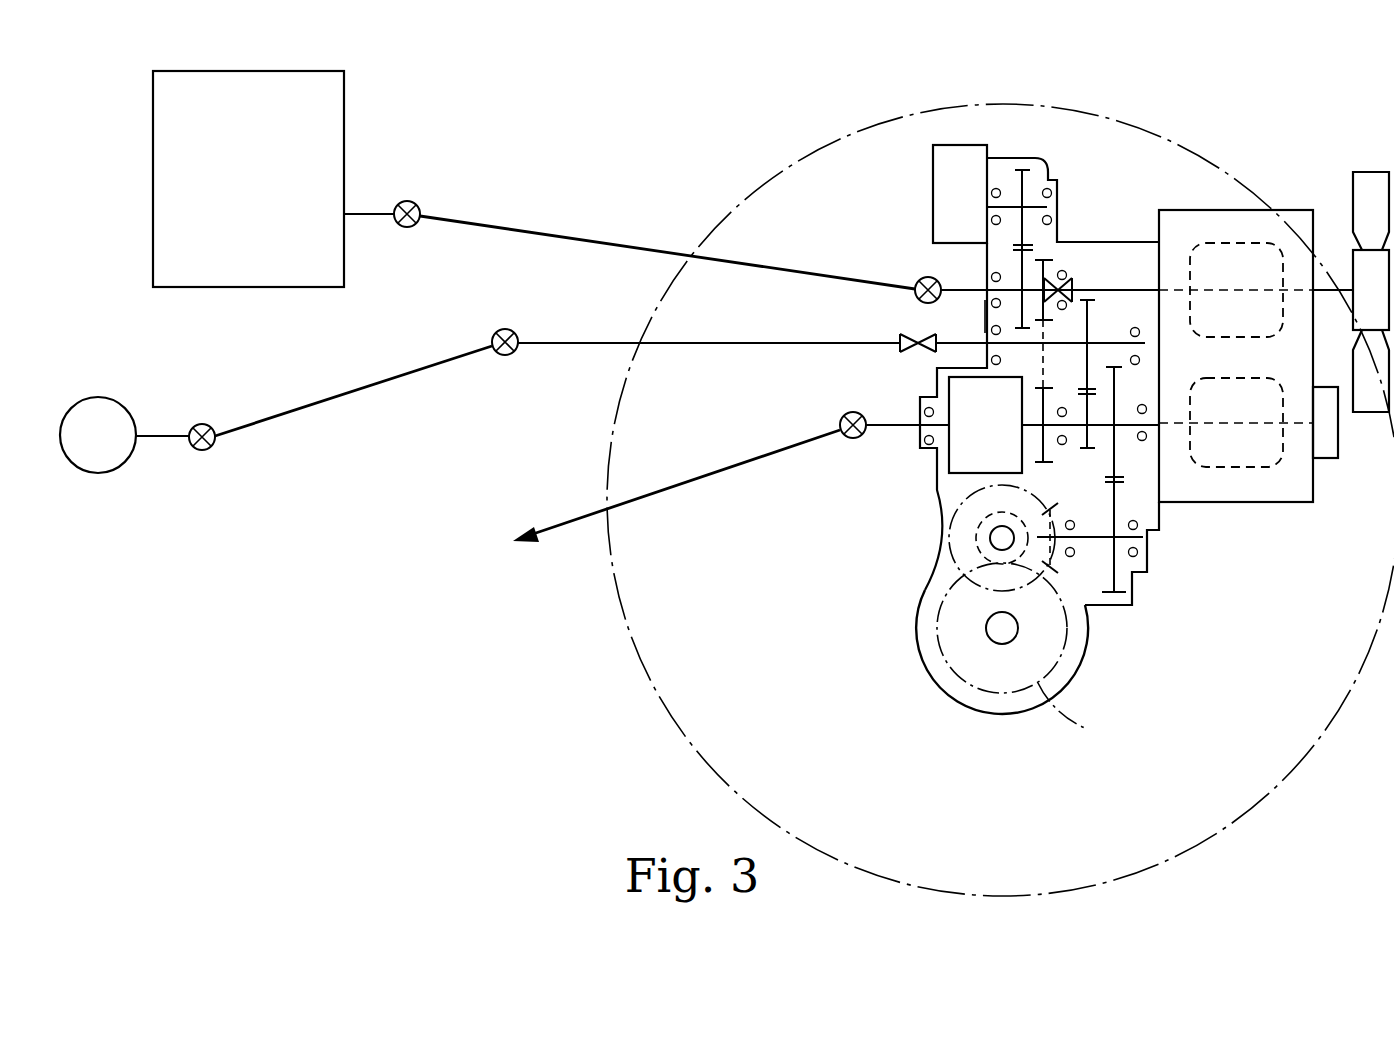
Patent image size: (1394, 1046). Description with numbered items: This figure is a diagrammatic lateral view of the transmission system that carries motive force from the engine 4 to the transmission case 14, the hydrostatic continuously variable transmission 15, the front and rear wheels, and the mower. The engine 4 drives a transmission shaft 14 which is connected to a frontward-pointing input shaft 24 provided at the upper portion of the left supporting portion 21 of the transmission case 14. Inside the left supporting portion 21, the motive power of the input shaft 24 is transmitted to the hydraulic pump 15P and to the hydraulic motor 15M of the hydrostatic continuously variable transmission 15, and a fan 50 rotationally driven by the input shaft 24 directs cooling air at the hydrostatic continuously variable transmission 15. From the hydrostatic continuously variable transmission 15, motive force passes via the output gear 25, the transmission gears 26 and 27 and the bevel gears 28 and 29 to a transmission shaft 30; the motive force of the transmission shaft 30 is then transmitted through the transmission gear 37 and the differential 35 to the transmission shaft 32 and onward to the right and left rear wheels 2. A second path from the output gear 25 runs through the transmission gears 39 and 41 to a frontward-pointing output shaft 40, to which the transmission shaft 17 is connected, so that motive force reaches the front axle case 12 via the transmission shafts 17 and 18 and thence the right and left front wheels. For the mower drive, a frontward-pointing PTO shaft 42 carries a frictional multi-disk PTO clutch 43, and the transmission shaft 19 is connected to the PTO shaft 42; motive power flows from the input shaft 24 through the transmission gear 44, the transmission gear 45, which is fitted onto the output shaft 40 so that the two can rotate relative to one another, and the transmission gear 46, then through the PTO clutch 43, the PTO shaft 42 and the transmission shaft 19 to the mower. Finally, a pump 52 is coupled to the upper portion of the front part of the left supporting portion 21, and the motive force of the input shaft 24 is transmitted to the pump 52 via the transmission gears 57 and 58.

The rear wheels 2 is at (1153, 137).
The engine 4 is at (344, 108).
The front axle case 12 is at (98, 473).
The transmission case 14 is at (582, 232).
The hydrostatic continuously variable transmission 15 is at (1228, 514).
The hydraulic pump 15P is at (1252, 243).
The hydraulic motor 15M is at (1265, 467).
The transmission shaft 17 is at (692, 343).
The transmission shaft 18 is at (335, 397).
The transmission shaft 19 is at (667, 490).
The left supporting portion 21 is at (1003, 715).
The input shaft 24 is at (960, 287).
The output gear 25 is at (1148, 427).
The transmission gear 26 is at (1120, 393).
The transmission gear 27 is at (1130, 576).
The bevel gear 28 is at (1048, 573).
The bevel gear 29 is at (948, 541).
The transmission shaft 30 is at (1003, 526).
The transmission shaft 32 is at (985, 630).
The differential 35 is at (1081, 714).
The transmission gear 37 is at (975, 548).
The transmission gear 39 is at (1140, 458).
The output shaft 40 is at (955, 347).
The transmission gear 41 is at (1088, 315).
The PTO shaft 42 is at (888, 428).
The PTO clutch 43 is at (935, 452).
The transmission gear 44 is at (1047, 267).
The transmission gear 45 is at (1043, 357).
The transmission gear 46 is at (1048, 447).
The fan 50 is at (1372, 172).
The pump 52 is at (933, 185).
The transmission gear 57 is at (1020, 314).
The transmission gear 58 is at (1030, 178).